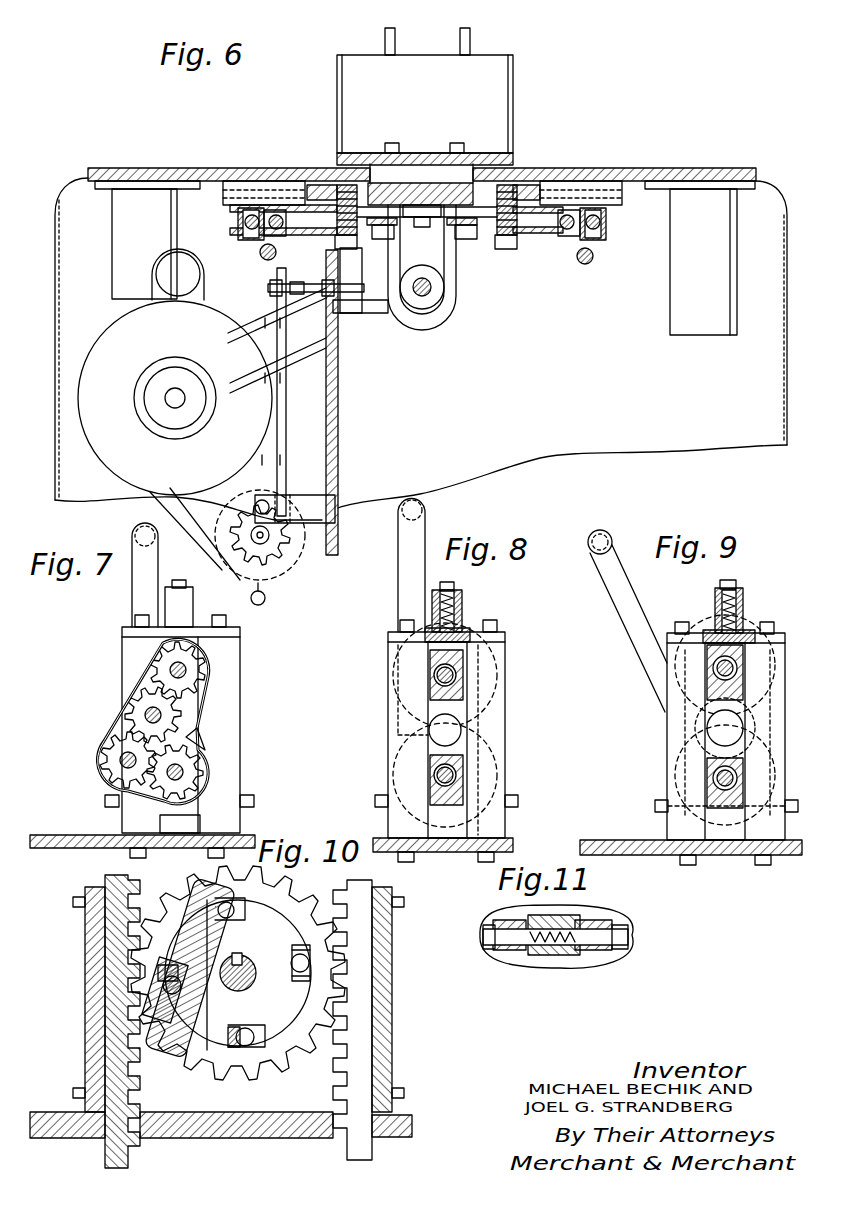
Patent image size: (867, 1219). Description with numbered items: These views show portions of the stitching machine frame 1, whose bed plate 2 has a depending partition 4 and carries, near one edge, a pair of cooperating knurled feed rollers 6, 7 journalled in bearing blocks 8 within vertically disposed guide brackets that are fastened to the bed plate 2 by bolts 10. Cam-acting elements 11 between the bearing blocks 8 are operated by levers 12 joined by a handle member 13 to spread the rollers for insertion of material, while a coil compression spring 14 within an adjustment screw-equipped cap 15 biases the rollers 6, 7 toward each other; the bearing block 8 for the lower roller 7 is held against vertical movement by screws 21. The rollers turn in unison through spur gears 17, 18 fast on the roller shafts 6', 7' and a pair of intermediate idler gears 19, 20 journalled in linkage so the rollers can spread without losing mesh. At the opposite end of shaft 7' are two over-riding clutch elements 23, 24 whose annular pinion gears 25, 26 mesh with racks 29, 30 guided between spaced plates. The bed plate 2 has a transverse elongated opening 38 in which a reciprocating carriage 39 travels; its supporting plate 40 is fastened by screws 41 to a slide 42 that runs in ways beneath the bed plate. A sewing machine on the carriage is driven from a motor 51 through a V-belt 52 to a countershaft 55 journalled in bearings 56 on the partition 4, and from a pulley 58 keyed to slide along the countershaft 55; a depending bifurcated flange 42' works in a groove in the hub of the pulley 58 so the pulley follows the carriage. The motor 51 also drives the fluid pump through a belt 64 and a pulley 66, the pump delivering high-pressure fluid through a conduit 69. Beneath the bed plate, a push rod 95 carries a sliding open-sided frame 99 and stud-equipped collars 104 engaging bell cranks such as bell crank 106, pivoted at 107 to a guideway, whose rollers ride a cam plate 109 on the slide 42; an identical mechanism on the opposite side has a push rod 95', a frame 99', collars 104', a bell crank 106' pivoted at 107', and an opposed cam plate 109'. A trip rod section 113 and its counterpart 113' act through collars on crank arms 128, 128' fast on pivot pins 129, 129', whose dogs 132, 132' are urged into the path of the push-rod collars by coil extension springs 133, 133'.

In FIG. 6, the frame 1 is at (785, 177).
In FIG. 7, the bed plate 2 is at (90, 835).
In FIG. 8, the bed plate 2 is at (513, 845).
In FIG. 9, the bed plate 2 is at (596, 840).
In FIG. 11, the bed plate 2 is at (598, 912).
In FIG. 6, the partition 4 is at (339, 446).
In FIG. 8, the feed roller 6 is at (472, 675).
In FIG. 9, the feed roller 6 is at (725, 642).
In FIG. 7, the shaft of feed roller 6' is at (231, 692).
In FIG. 8, the shaft of feed roller 6' is at (400, 676).
In FIG. 9, the shaft of feed roller 6' is at (764, 672).
In FIG. 8, the feed roller 7 is at (472, 775).
In FIG. 9, the feed roller 7 is at (718, 867).
In FIG. 7, the shaft of feed roller 7' is at (248, 754).
In FIG. 8, the shaft of feed roller 7' is at (400, 772).
In FIG. 9, the shaft of feed roller 7' is at (744, 775).
In FIG. 10, the shaft of feed roller 7' is at (244, 960).
In FIG. 11, the bearing blocks 8 is at (550, 955).
In FIG. 7, the bolts 10 is at (208, 860).
In FIG. 8, the bolts 10 is at (478, 862).
In FIG. 8, the cam-acting elements 11 is at (456, 745).
In FIG. 7, the levers 12 is at (132, 588).
In FIG. 8, the levers 12 is at (398, 554).
In FIG. 9, the levers 12 is at (622, 600).
In FIG. 7, the handle member 13 is at (132, 528).
In FIG. 8, the handle member 13 is at (424, 504).
In FIG. 9, the handle member 13 is at (607, 530).
In FIG. 8, the coil compression spring 14 is at (462, 612).
In FIG. 9, the coil compression spring 14 is at (740, 612).
In FIG. 7, the adjustment screw-equipped cap 15 is at (193, 597).
In FIG. 8, the adjustment screw-equipped cap 15 is at (455, 590).
In FIG. 9, the adjustment screw-equipped cap 15 is at (740, 625).
In FIG. 7, the spur gear 17 is at (206, 673).
In FIG. 7, the spur gear 18 is at (205, 782).
In FIG. 7, the idler gear 19 is at (126, 712).
In FIG. 7, the idler gear 20 is at (100, 758).
In FIG. 9, the screws 21 is at (660, 812).
In FIG. 10, the over-riding clutch element 23 is at (185, 950).
In FIG. 10, the over-riding clutch element 24 is at (290, 1000).
In FIG. 10, the annular pinion gear 25 is at (150, 992).
In FIG. 10, the annular pinion gear 26 is at (305, 1030).
In FIG. 10, the rack 29 is at (112, 1150).
In FIG. 10, the rack 30 is at (360, 1154).
In FIG. 6, the transverse elongated opening 38 is at (390, 143).
In FIG. 6, the reciprocating carriage 39 is at (527, 64).
In FIG. 6, the supporting plate 40 is at (466, 180).
In FIG. 6, the screws 41 is at (456, 143).
In FIG. 6, the slide 42 is at (427, 168).
In FIG. 6, the bifurcated flange 42' is at (442, 310).
In FIG. 6, the motor 51 is at (190, 342).
In FIG. 6, the V-belt 52 is at (340, 360).
In FIG. 6, the countershaft 55 is at (422, 297).
In FIG. 6, the bearings 56 is at (358, 314).
In FIG. 6, the pulley 58 is at (445, 326).
In FIG. 6, the belt 64 is at (200, 530).
In FIG. 6, the pulley 66 is at (298, 560).
In FIG. 6, the conduit 69 is at (266, 600).
In FIG. 6, the push rod 95 is at (214, 230).
In FIG. 6, the push rod 95' is at (619, 261).
In FIG. 6, the rectangular open-sided frame 99 is at (238, 222).
In FIG. 6, the open-sided rectangular frame 99' is at (618, 221).
In FIG. 6, the stud-equipped collar 104 is at (243, 232).
In FIG. 6, the collars 104' is at (607, 228).
In FIG. 6, the bell crank 106 is at (283, 237).
In FIG. 6, the bell crank 106' is at (534, 240).
In FIG. 6, the pivot 107 is at (316, 283).
In FIG. 6, the pivot 107' is at (508, 279).
In FIG. 6, the cam plate 109 is at (420, 226).
In FIG. 6, the cam plate 109' is at (418, 256).
In FIG. 6, the trip rod section 113 is at (266, 263).
In FIG. 6, the trip rod section 113' is at (543, 270).
In FIG. 6, the crank arm 128 is at (274, 158).
In FIG. 6, the crank arm 128' is at (586, 150).
In FIG. 6, the pivot pin 129 is at (200, 210).
In FIG. 6, the pivot pins 129' is at (644, 151).
In FIG. 6, the dog 132 is at (241, 158).
In FIG. 6, the dog 132' is at (606, 161).
In FIG. 6, the coil extension spring 133 is at (247, 258).
In FIG. 6, the coil extension springs 133' is at (590, 272).